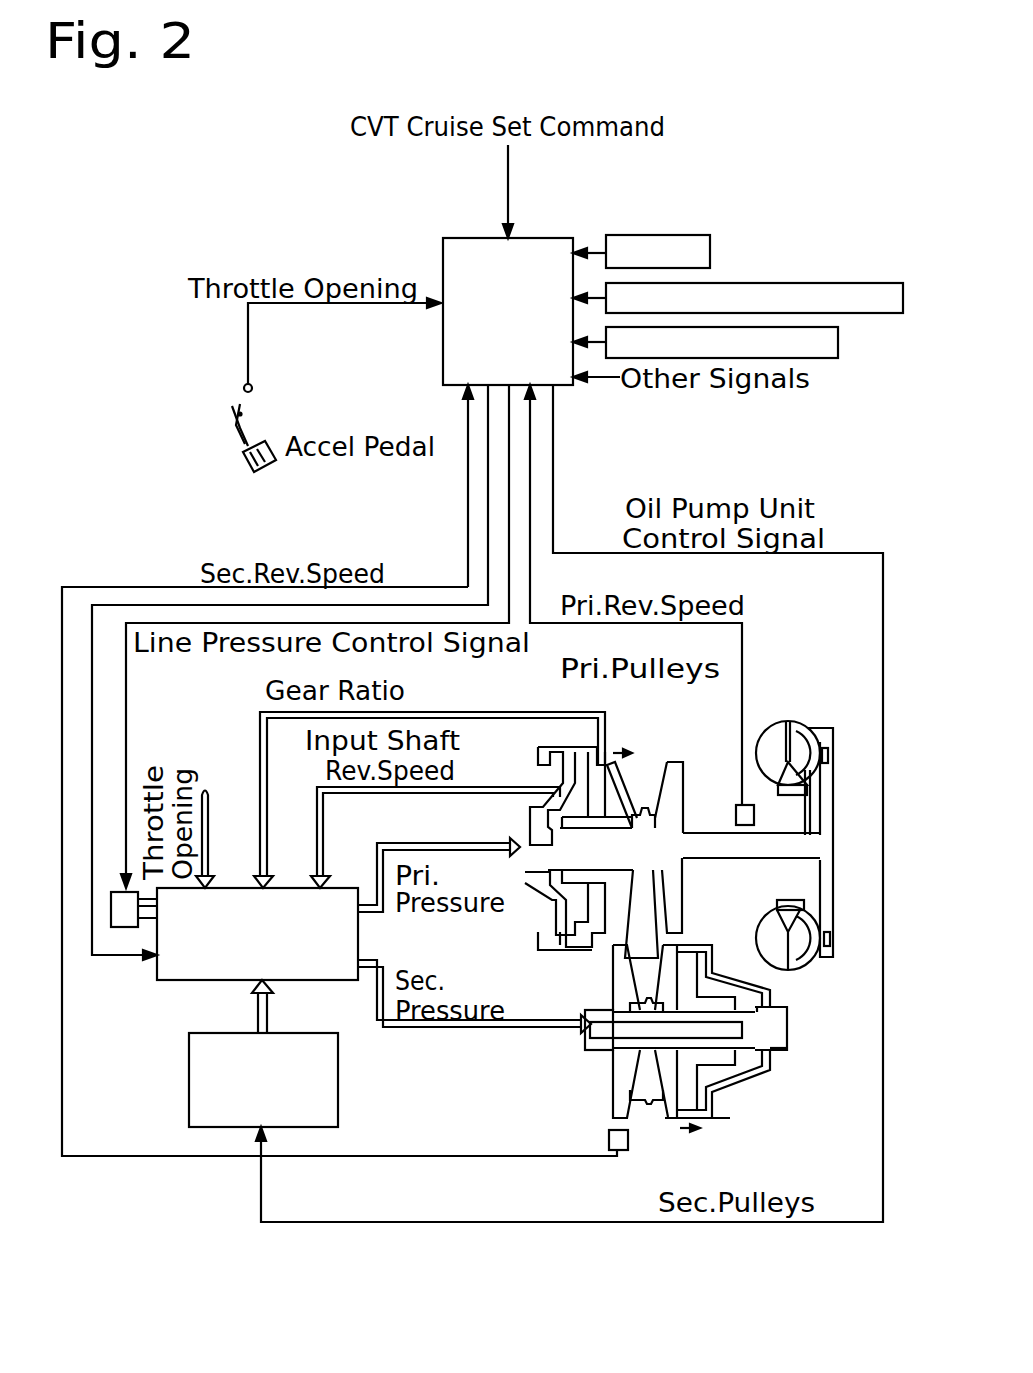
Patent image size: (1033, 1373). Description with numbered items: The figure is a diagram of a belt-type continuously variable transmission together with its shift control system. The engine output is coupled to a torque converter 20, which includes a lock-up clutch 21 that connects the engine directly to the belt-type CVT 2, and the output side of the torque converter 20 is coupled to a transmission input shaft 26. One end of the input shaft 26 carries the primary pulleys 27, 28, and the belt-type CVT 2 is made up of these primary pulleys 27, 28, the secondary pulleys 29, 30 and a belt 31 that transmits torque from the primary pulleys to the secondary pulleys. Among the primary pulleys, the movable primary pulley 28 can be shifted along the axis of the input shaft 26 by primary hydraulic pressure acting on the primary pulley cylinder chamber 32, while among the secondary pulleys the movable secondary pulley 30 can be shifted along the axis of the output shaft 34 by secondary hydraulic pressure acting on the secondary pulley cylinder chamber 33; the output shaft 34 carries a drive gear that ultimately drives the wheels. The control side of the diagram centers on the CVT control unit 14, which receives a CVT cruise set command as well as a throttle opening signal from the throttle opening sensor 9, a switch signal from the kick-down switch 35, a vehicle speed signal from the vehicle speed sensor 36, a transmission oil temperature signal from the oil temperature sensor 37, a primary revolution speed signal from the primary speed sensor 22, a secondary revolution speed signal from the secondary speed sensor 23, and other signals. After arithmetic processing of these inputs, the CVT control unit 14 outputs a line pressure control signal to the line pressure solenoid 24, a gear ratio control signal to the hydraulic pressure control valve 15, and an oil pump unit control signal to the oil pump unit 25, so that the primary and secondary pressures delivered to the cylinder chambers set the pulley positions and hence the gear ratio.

The belt-type CVT 2 is at (549, 900).
The throttle opening sensor 9 is at (244, 388).
The CVT control unit 14 is at (443, 240).
The hydraulic pressure control valve 15 is at (185, 980).
The torque converter 20 is at (790, 722).
The lock-up clutch 21 is at (832, 885).
The primary speed sensor 22 is at (754, 815).
The secondary speed sensor 23 is at (608, 1140).
The line pressure solenoid 24 is at (125, 927).
The oil pump unit 25 is at (338, 1080).
The transmission input shaft 26 is at (705, 870).
The primary pulley 27 is at (672, 770).
The movable primary pulley 28 is at (620, 775).
The secondary pulley 29 is at (628, 1110).
The movable secondary pulley 30 is at (715, 1120).
The belt 31 is at (645, 912).
The primary pulley cylinder chamber 32 is at (585, 790).
The secondary pulley cylinder chamber 33 is at (740, 1002).
The output shaft 34 is at (787, 1040).
The kick-down switch 35 is at (710, 253).
The vehicle speed sensor 36 is at (830, 283).
The oil temperature sensor 37 is at (838, 342).